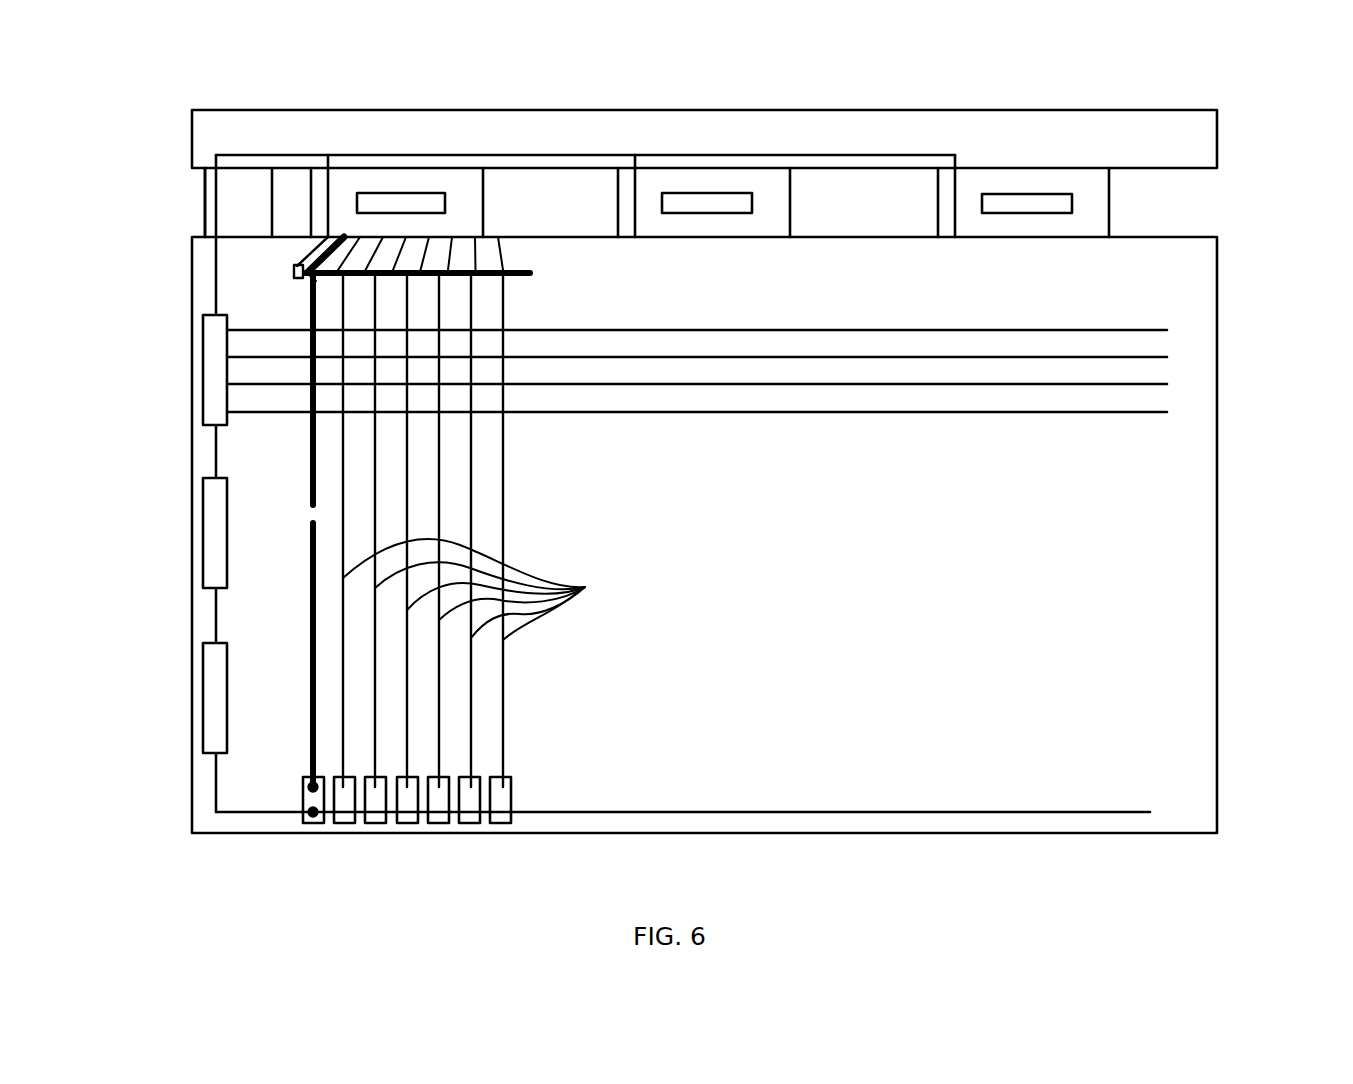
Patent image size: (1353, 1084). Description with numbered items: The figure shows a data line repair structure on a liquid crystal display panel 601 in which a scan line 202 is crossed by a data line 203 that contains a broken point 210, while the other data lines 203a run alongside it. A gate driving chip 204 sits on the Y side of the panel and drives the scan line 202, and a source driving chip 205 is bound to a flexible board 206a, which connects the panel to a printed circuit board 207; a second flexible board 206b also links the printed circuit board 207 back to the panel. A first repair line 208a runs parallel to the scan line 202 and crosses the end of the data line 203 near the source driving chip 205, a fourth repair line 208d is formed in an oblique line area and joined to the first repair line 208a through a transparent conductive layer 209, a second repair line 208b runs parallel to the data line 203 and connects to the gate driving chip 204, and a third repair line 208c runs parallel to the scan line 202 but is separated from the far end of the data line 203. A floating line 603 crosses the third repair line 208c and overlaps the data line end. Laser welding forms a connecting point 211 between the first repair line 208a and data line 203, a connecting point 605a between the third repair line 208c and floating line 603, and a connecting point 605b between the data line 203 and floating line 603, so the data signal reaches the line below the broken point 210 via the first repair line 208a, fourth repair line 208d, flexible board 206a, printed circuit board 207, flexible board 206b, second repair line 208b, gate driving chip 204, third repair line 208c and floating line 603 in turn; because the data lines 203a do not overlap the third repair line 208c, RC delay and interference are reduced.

The scan line 202 is at (1105, 330).
The data line 203 is at (310, 305).
The data lines 203a is at (498, 531).
The gate driving chip 204 is at (203, 395).
The source driving chip 205 is at (422, 203).
The flexible board 206a is at (486, 215).
The flexible board 206b is at (203, 183).
The printed circuit board 207 is at (1218, 138).
The first repair line 208a is at (532, 272).
The second repair line 208b is at (213, 273).
The third repair line 208c is at (1137, 808).
The fourth repair line 208d is at (300, 237).
The transparent conductive layer 209 is at (293, 269).
The broken point 210 is at (302, 512).
The connecting point 211 is at (305, 282).
The liquid crystal display panel 601 is at (1233, 301).
The floating line 603 is at (302, 800).
The connecting point 605a is at (316, 818).
The connecting point 605b is at (305, 785).